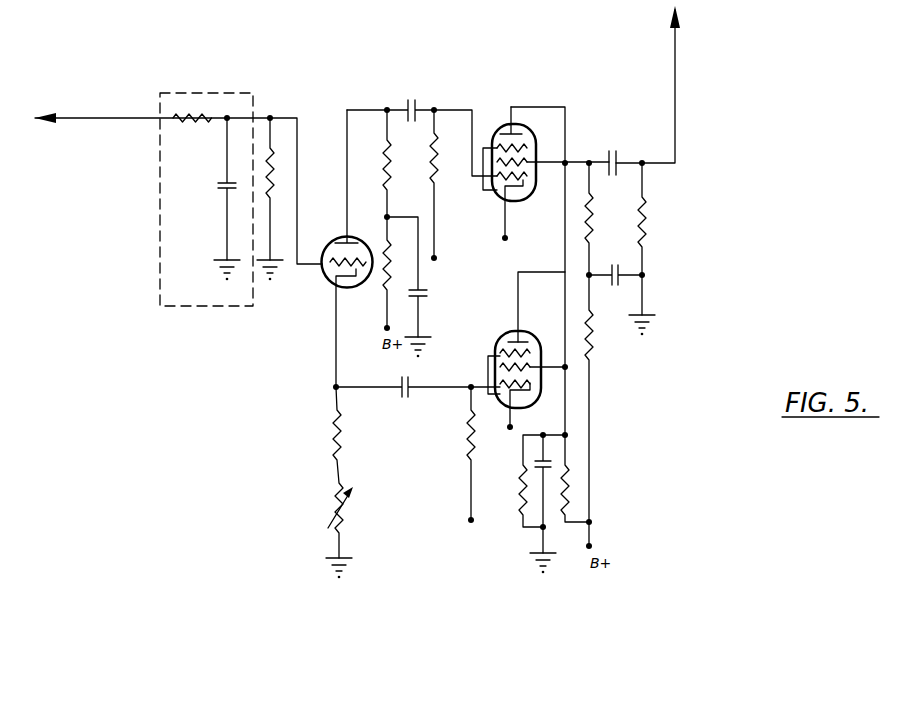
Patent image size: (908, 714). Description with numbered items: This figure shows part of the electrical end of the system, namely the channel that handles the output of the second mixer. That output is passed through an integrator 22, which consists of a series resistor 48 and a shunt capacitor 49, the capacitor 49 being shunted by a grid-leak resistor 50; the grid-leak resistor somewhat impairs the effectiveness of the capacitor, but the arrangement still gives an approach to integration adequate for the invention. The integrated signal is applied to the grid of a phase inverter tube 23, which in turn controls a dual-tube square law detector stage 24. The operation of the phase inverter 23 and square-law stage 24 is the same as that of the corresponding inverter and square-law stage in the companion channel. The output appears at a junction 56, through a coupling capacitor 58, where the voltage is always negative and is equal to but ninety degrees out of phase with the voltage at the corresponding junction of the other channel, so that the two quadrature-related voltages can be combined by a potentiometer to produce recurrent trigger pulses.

The integrator 22 is at (225, 186).
The phase inverter tube 23 is at (338, 219).
The dual-tube square law detector stage 24 is at (528, 97).
The series resistor 48 is at (186, 110).
The shunt capacitor 49 is at (222, 186).
The grid-leak resistor 50 is at (277, 178).
The junction 56 is at (645, 168).
The coupling capacitor 58 is at (617, 148).